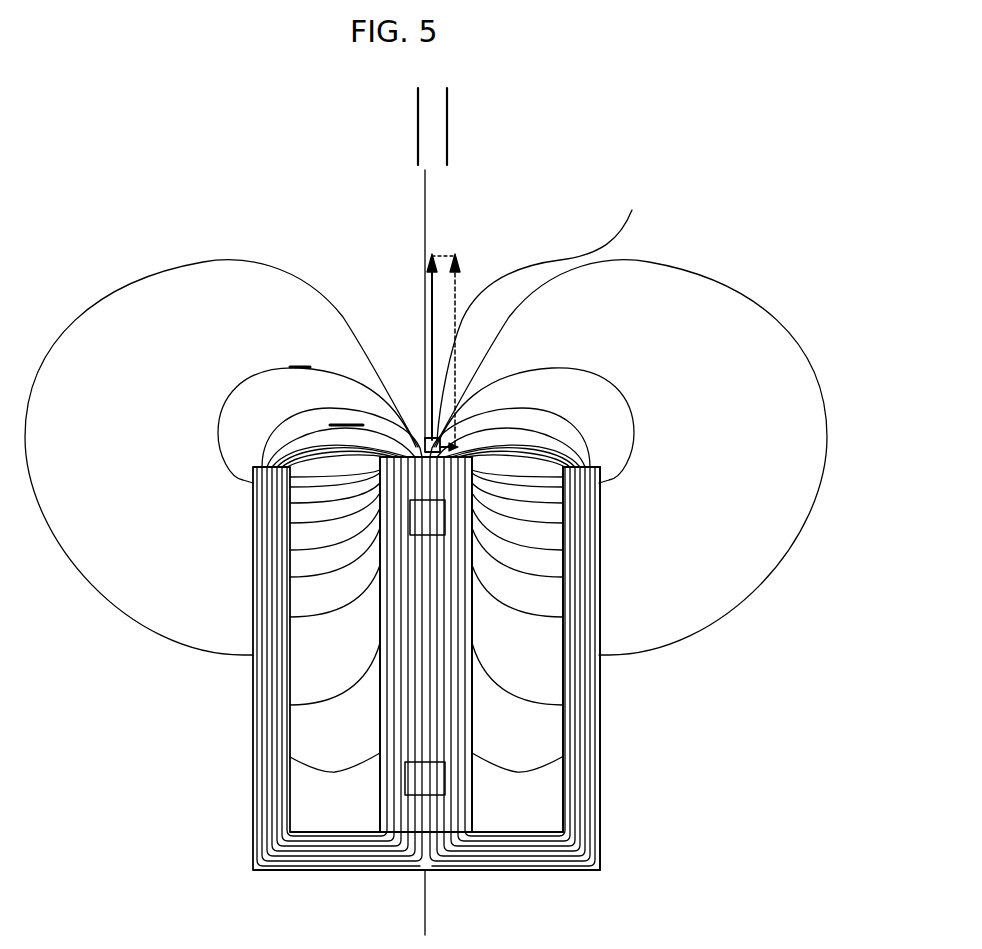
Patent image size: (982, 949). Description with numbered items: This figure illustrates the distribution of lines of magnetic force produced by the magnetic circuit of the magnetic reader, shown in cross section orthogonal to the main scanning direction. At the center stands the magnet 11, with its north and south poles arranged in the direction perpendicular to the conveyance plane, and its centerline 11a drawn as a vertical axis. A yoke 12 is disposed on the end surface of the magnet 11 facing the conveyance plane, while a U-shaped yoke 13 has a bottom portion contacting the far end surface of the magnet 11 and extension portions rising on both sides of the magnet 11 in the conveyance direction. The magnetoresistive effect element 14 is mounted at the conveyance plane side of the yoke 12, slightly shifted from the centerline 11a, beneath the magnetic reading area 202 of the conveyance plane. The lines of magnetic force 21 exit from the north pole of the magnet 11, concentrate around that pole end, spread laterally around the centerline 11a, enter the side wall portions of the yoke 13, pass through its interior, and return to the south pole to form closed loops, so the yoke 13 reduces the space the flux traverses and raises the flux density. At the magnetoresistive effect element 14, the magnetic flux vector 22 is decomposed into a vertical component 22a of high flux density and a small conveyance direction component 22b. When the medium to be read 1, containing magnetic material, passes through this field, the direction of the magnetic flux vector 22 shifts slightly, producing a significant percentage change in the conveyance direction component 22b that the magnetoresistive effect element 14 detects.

The medium to be read 1 is at (338, 428).
The magnet 11 is at (290, 752).
The centerline of the magnet 11a is at (423, 232).
The yoke 12 is at (473, 455).
The yoke 13 is at (600, 773).
The magnetoresistive effect element 14 is at (422, 448).
The lines of magnetic force 21 is at (720, 278).
The magnetic flux vector 22 is at (543, 312).
The vertical component 22a is at (438, 258).
The conveyance direction component 22b is at (458, 445).
The magnetic reading area 202 is at (430, 130).